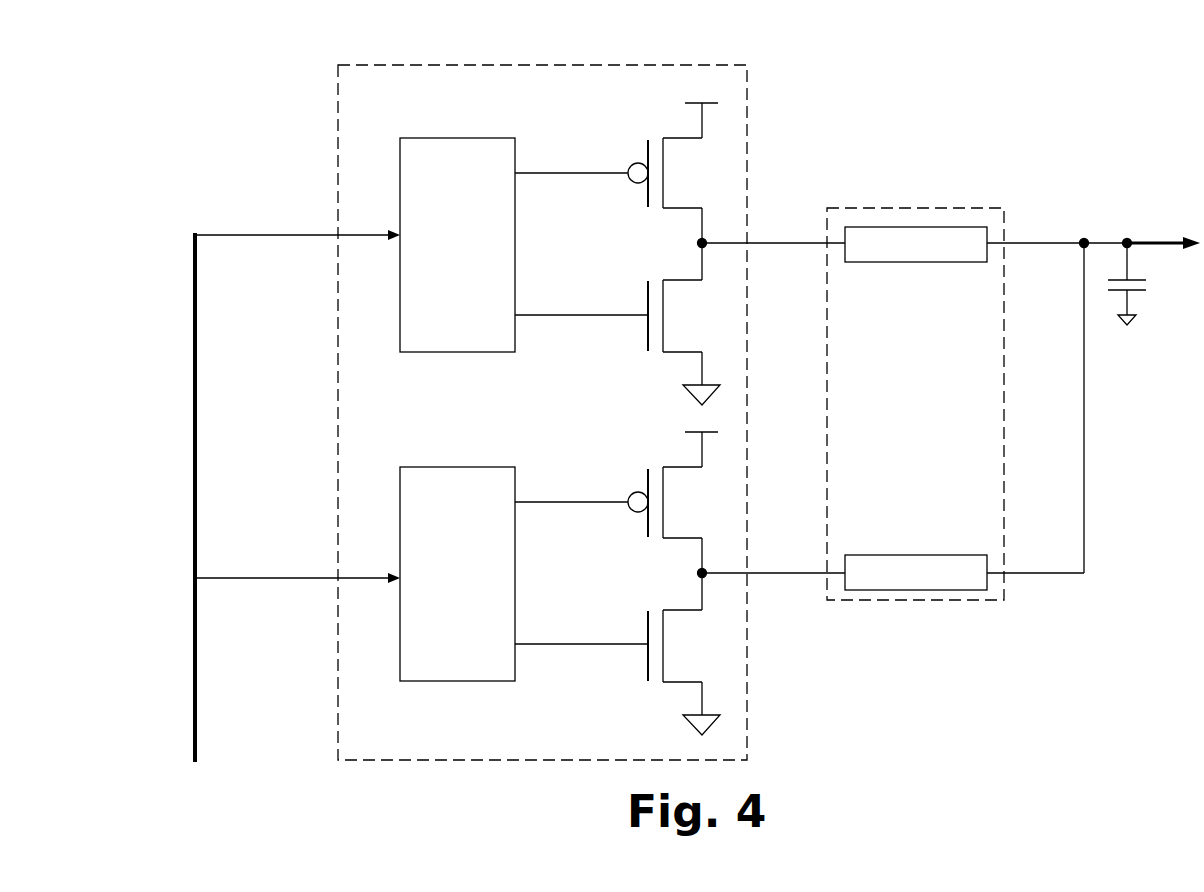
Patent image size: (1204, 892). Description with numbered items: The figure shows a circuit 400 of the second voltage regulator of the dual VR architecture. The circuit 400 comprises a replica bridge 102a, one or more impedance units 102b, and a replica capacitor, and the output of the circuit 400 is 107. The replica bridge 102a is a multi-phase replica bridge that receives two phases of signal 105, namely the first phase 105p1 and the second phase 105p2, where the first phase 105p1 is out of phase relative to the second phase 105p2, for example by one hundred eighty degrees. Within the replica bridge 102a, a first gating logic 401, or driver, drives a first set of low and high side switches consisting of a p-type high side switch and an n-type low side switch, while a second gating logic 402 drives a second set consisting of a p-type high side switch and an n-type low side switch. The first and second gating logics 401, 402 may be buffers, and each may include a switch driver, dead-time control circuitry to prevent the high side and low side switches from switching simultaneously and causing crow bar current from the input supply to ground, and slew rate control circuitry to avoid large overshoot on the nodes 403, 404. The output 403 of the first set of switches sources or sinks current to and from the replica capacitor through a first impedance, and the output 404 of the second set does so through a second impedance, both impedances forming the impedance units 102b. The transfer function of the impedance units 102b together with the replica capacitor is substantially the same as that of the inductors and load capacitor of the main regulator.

The circuit 400 is at (187, 55).
The replica bridge 102a is at (542, 412).
The impedance units 102b is at (915, 404).
The signal 105 is at (196, 513).
The first phase signal 105p1 is at (297, 247).
The second phase signal 105p2 is at (297, 567).
The first gating logic 401 is at (457, 245).
The second gating logic 402 is at (457, 574).
The output of first set of switches 403 is at (770, 243).
The output of second set of switches 404 is at (767, 573).
The output 107 is at (1048, 244).